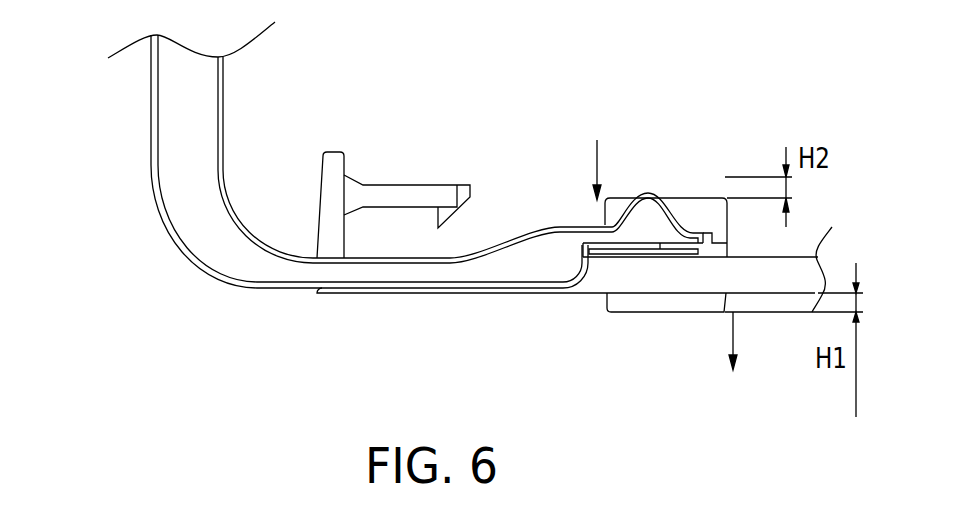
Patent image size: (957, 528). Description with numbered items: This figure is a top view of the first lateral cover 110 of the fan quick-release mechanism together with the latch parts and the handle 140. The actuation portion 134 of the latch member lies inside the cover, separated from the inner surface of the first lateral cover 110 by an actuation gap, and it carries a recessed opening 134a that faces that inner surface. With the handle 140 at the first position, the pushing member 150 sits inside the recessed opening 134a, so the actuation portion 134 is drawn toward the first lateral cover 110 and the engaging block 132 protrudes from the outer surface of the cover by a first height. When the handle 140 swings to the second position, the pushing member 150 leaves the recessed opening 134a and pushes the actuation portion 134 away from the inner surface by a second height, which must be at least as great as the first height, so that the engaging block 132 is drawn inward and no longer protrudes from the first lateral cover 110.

The first lateral cover 110 is at (593, 283).
The engaging block 132 is at (660, 312).
The actuation portion 134 is at (707, 207).
The recessed opening 134a is at (649, 183).
The handle 140 is at (192, 222).
The pushing member 150 is at (663, 207).